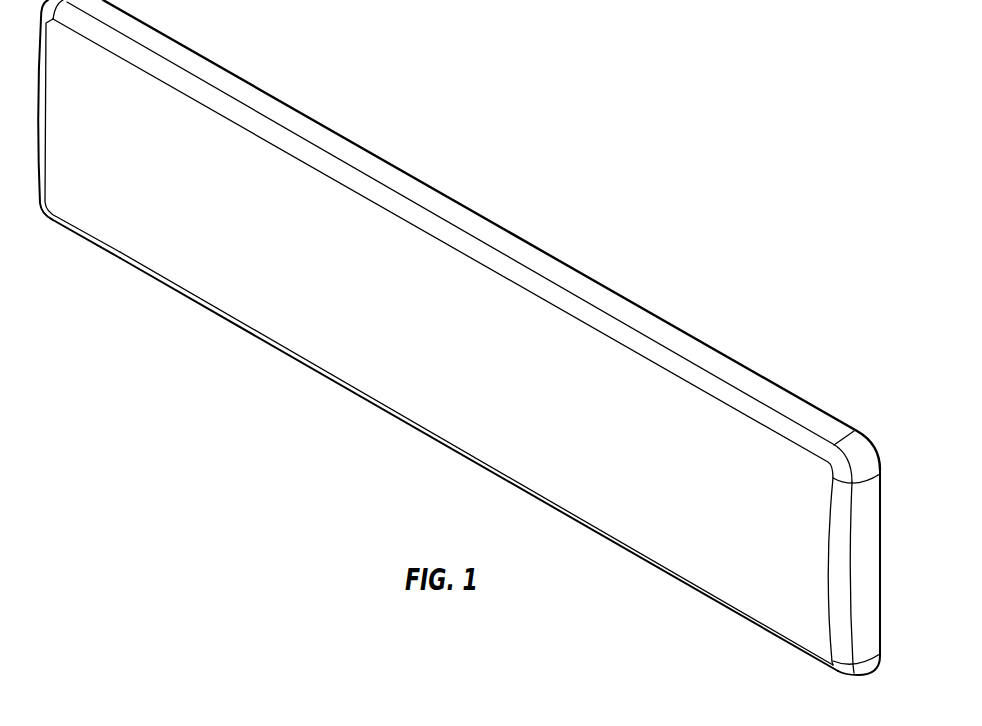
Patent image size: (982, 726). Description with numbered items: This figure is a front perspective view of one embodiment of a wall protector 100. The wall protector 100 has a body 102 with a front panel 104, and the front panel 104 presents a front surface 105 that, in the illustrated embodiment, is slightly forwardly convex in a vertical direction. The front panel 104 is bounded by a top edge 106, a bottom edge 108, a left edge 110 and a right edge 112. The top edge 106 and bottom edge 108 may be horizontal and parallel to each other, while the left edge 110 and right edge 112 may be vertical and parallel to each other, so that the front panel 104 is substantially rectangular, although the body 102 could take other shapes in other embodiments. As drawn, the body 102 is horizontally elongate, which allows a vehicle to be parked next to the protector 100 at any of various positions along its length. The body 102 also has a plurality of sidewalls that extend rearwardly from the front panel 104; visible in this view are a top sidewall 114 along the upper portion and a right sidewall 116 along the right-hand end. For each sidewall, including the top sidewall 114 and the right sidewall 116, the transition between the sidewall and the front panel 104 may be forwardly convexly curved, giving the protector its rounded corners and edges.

The wall protector 100 is at (481, 337).
The body 102 is at (266, 101).
The front panel 104 is at (310, 250).
The front surface 105 is at (648, 438).
The top edge 106 is at (442, 230).
The bottom edge 108 is at (393, 411).
The left edge 110 is at (42, 122).
The right edge 112 is at (835, 588).
The top sidewall 114 is at (583, 284).
The right sidewall 116 is at (868, 540).